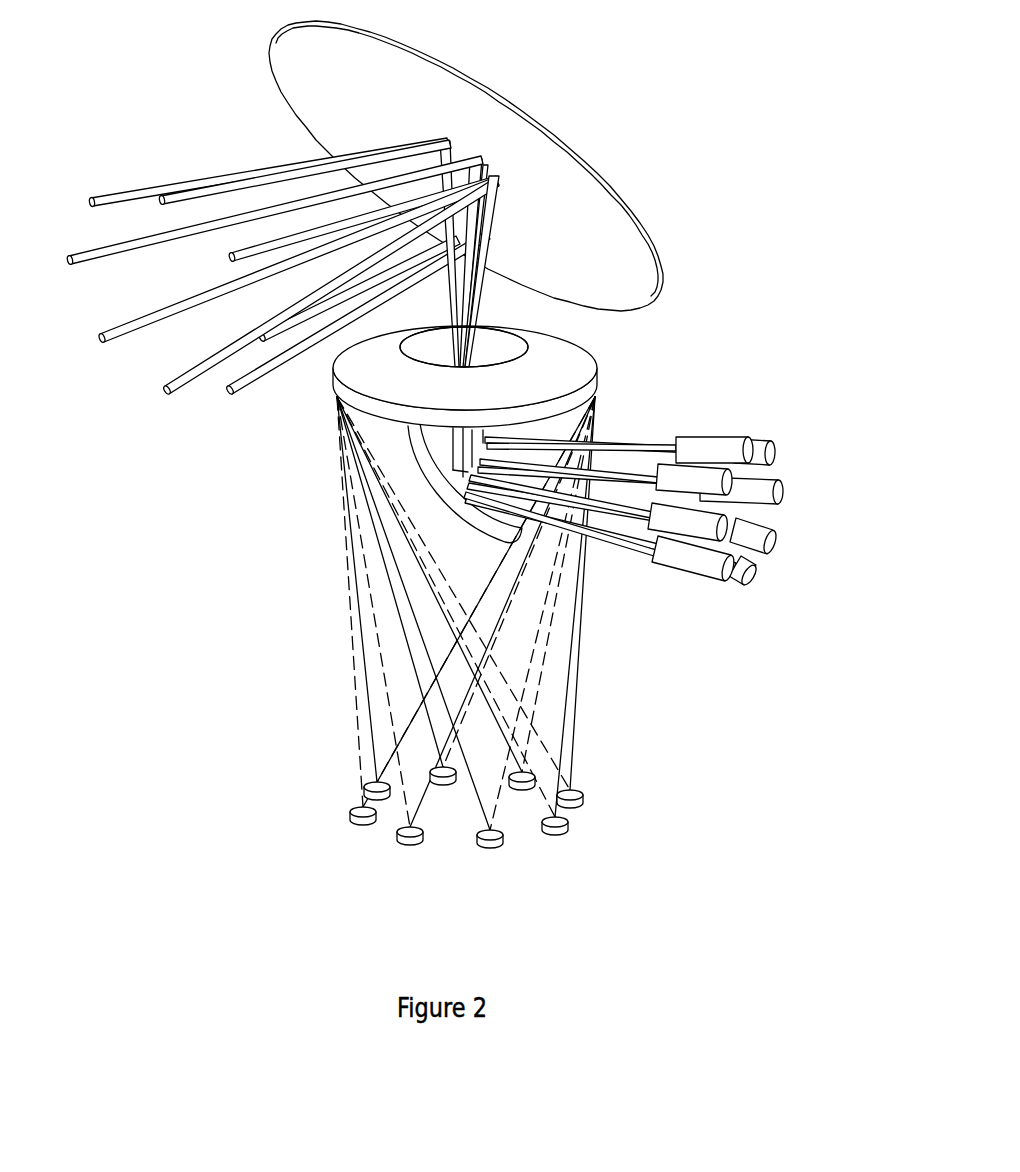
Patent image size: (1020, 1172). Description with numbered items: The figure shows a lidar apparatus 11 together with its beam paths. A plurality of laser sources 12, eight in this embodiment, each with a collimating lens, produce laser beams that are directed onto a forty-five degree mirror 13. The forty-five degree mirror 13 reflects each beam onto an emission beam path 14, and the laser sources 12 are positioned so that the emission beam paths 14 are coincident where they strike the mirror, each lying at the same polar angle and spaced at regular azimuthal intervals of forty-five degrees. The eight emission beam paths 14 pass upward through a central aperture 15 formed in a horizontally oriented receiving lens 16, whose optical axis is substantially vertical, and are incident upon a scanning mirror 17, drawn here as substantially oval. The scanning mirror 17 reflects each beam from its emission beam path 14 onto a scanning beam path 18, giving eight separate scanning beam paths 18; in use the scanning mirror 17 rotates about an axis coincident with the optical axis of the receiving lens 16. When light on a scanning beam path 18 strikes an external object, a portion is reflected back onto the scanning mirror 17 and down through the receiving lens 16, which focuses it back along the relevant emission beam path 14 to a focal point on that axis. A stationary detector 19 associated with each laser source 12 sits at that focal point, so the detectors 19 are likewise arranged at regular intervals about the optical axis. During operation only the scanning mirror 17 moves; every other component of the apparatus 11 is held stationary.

The lidar apparatus 11 is at (700, 653).
The laser sources 12 is at (713, 443).
The 45° mirror 13 is at (445, 497).
The emission beam paths 14 is at (399, 341).
The central aperture 15 is at (505, 345).
The receiving lens 16 is at (595, 362).
The scanning mirror 17 is at (530, 113).
The scanning beam paths 18 is at (137, 330).
The detectors 19 is at (500, 845).